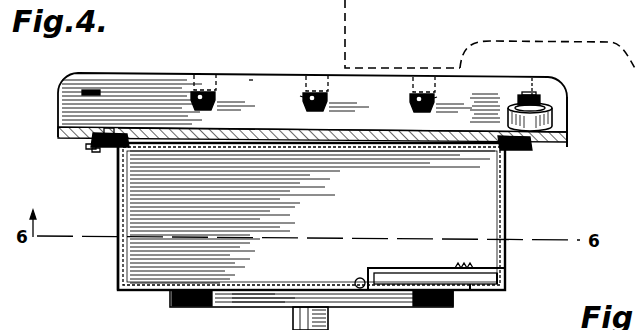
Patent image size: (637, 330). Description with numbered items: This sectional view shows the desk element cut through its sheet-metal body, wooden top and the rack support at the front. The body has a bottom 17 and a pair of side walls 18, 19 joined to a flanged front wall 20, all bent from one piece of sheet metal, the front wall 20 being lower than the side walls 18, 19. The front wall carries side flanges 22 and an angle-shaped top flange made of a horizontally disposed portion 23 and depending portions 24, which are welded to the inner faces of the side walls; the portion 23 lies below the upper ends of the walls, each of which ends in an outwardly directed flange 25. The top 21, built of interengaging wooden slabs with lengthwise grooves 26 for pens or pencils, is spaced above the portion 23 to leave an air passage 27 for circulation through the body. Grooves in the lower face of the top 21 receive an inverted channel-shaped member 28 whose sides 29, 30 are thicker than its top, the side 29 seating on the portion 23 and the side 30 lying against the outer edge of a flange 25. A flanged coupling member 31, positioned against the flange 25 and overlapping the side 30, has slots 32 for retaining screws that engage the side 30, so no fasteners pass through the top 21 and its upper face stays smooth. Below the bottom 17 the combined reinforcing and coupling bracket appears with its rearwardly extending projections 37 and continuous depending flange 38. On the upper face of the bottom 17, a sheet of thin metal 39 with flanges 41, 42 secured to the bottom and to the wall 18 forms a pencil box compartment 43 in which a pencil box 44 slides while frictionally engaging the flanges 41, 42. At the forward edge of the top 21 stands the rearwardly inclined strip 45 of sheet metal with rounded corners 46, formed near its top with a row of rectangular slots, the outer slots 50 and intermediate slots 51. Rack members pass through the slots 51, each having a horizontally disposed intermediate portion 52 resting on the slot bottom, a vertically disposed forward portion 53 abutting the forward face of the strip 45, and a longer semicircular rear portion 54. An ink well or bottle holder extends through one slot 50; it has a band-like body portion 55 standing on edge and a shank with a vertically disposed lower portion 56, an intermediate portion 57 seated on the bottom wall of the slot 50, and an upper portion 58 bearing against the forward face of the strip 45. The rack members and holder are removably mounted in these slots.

The bottom 17 is at (257, 285).
The side wall 18 is at (506, 220).
The side wall 19 is at (120, 191).
The flanged front wall 20 is at (480, 198).
The top 21 is at (568, 143).
The side flange 22 is at (497, 215).
The horizontally disposed portion 23 is at (300, 152).
The depending portion 24 is at (495, 156).
The flange 25 is at (115, 134).
The groove 26 is at (350, 132).
The air passage 27 is at (108, 134).
The channel-shaped member 28 is at (112, 134).
The side 29 is at (120, 134).
The side 30 is at (67, 110).
The flanged coupling member 31 is at (88, 147).
The slot 32 is at (95, 150).
The rearwardly extending projection 37 is at (212, 306).
The continuous flange 38 is at (417, 308).
The sheet of thin metal 39 is at (428, 267).
The flange 41 is at (367, 276).
The flange 42 is at (506, 276).
The pencil box compartment 43 is at (464, 264).
The pencil box 44 is at (474, 286).
The strip 45 is at (562, 108).
The rounded corner 46 is at (251, 80).
The outer slot 50 is at (63, 82).
The intermediate slot 51 is at (330, 97).
The intermediate portion 52 is at (220, 90).
The forward portion 53 is at (197, 70).
The semicircular rear portion 54 is at (195, 108).
The band-like body portion 55 is at (565, 128).
The lower portion 56 is at (518, 98).
The intermediate portion 57 is at (540, 97).
The upper portion 58 is at (526, 78).